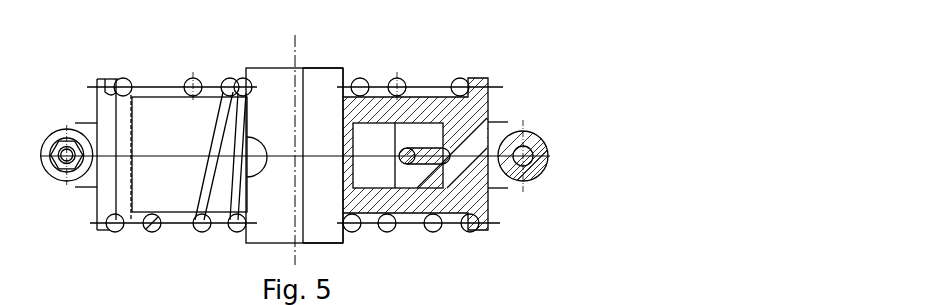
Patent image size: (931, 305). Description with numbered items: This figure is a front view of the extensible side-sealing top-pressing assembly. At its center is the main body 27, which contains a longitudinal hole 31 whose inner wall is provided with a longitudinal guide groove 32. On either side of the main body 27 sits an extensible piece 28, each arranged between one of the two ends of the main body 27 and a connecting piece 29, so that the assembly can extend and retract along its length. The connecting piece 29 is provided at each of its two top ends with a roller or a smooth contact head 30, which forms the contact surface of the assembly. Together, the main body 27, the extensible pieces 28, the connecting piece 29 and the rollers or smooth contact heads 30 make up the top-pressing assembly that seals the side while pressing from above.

The main body 27 is at (318, 86).
The extensible piece 28 is at (396, 88).
The connecting piece 29 is at (479, 131).
The roller or smooth contact head 30 is at (537, 143).
The longitudinal hole 31 is at (323, 162).
The longitudinal guide groove 32 is at (298, 183).